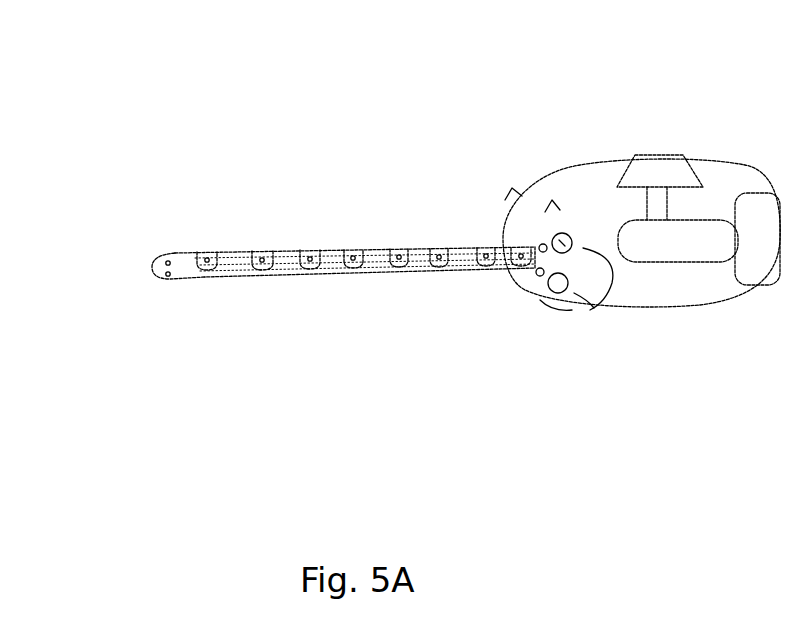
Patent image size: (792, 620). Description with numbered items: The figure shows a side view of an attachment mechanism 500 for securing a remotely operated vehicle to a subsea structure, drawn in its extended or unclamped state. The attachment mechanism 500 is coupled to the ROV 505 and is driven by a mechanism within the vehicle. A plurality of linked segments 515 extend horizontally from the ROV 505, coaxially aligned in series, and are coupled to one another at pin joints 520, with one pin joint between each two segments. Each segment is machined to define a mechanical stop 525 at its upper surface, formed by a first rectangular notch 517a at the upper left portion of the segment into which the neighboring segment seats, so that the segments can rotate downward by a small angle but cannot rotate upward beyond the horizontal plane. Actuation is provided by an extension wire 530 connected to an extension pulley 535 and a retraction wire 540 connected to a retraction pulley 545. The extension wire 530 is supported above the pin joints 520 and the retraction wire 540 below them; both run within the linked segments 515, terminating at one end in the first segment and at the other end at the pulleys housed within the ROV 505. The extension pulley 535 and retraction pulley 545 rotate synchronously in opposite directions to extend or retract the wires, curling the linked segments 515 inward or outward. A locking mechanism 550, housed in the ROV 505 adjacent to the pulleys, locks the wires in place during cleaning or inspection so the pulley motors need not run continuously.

The attachment mechanism 500 is at (272, 135).
The ROV 505 is at (583, 183).
The plurality of linked segments 515 is at (483, 218).
The pin joints 520 is at (397, 260).
The mechanical stop 525 is at (277, 253).
The extension wire 530 is at (180, 262).
The extension pulley 535 is at (558, 238).
The retraction wire 540 is at (185, 270).
The retraction pulley 545 is at (560, 292).
The locking mechanism 550 is at (538, 275).
The first rectangular notch 517a is at (688, 617).